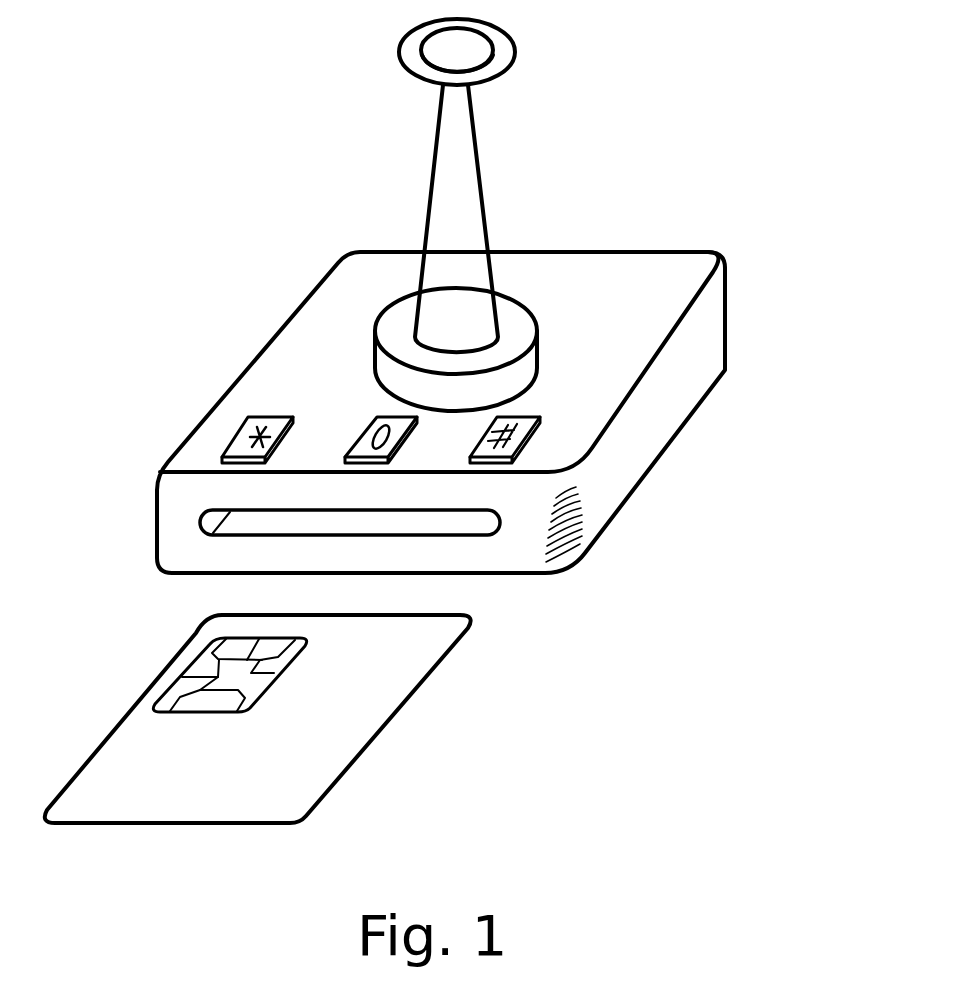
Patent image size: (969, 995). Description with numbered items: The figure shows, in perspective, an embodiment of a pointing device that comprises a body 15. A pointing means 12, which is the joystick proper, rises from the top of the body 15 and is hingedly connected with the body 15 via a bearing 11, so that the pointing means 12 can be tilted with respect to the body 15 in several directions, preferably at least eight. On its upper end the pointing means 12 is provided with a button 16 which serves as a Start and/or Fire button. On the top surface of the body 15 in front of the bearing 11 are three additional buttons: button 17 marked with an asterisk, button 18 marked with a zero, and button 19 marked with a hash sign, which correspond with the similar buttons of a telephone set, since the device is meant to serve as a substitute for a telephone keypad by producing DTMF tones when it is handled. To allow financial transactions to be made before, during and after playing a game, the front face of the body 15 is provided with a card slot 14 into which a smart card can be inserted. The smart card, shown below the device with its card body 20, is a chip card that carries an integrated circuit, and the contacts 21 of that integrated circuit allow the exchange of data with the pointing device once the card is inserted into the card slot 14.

The bearing 11 is at (375, 352).
The pointing means 12 is at (480, 170).
The card slot 14 is at (288, 522).
The body 15 is at (727, 315).
The button 16 is at (495, 47).
The button 17 is at (235, 435).
The button 18 is at (361, 436).
The button 19 is at (537, 437).
The card body 20 is at (121, 718).
The contacts 21 is at (193, 658).